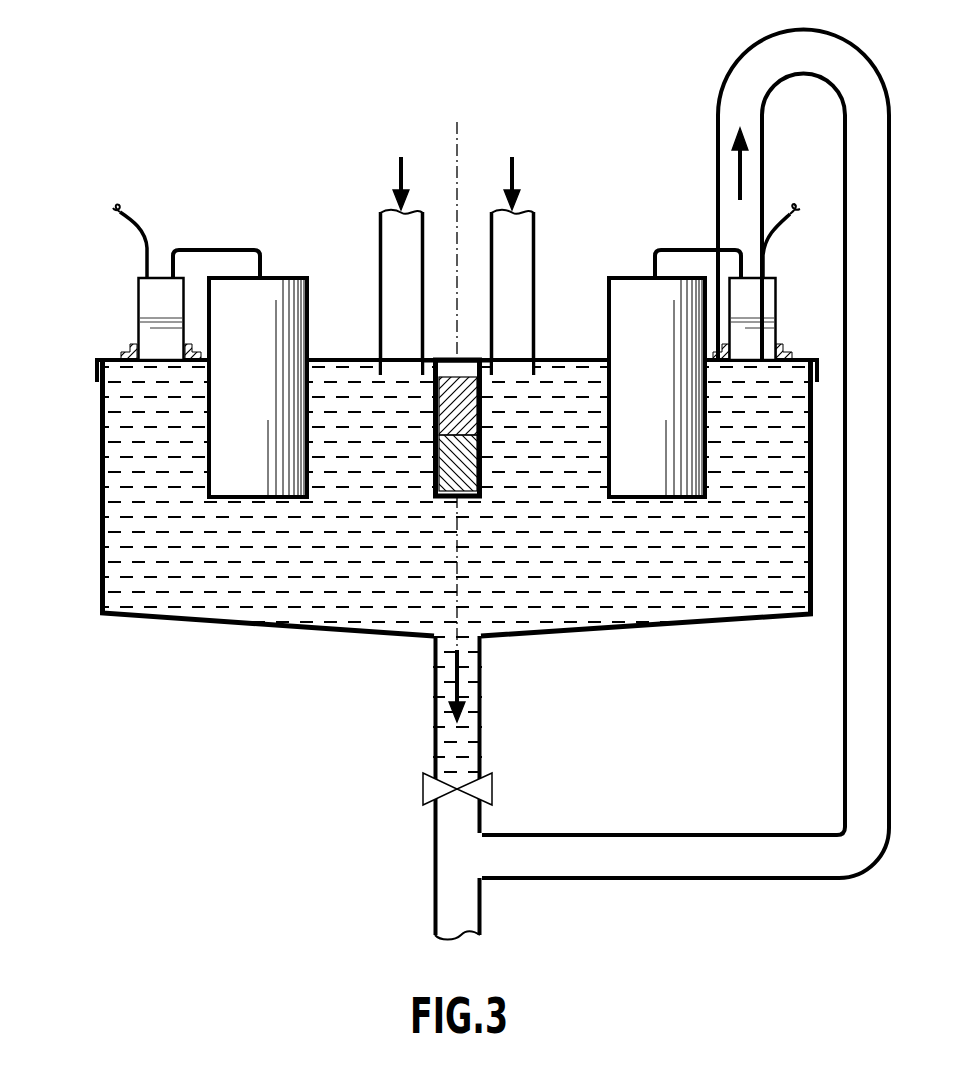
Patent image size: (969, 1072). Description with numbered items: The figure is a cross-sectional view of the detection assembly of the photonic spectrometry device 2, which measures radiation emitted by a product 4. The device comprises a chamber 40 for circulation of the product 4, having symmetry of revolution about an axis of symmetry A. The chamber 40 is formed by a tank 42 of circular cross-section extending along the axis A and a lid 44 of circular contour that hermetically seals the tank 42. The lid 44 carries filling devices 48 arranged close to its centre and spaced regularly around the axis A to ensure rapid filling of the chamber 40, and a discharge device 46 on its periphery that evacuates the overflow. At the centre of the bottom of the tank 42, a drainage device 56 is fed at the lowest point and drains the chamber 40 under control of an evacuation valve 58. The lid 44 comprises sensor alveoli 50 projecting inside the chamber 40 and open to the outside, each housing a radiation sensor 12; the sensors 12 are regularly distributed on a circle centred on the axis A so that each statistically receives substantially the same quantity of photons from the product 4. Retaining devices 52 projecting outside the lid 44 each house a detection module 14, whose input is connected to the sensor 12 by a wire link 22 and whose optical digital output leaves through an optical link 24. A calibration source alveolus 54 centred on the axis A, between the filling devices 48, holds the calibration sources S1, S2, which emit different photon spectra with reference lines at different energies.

The photonic spectrometry device 2 is at (60, 422).
The product 4 is at (763, 588).
The radiation sensor 12 is at (457, 462).
The electronic detection and quantification module 14 is at (147, 290).
The wire link 22 is at (211, 250).
The optical link 24 is at (143, 232).
The chamber 40 is at (414, 511).
The tank 42 is at (123, 618).
The lid 44 is at (110, 358).
The discharge device 46 is at (718, 135).
The filling device 48 is at (382, 230).
The sensor alveolus 50 is at (243, 500).
The retaining device 52 is at (132, 350).
The calibration source alveolus 54 is at (462, 506).
The drainage device 56 is at (470, 745).
The evacuation valve 58 is at (487, 785).
The calibration source S1 is at (437, 463).
The calibration source S2 is at (478, 403).
The axis of symmetry A is at (466, 374).